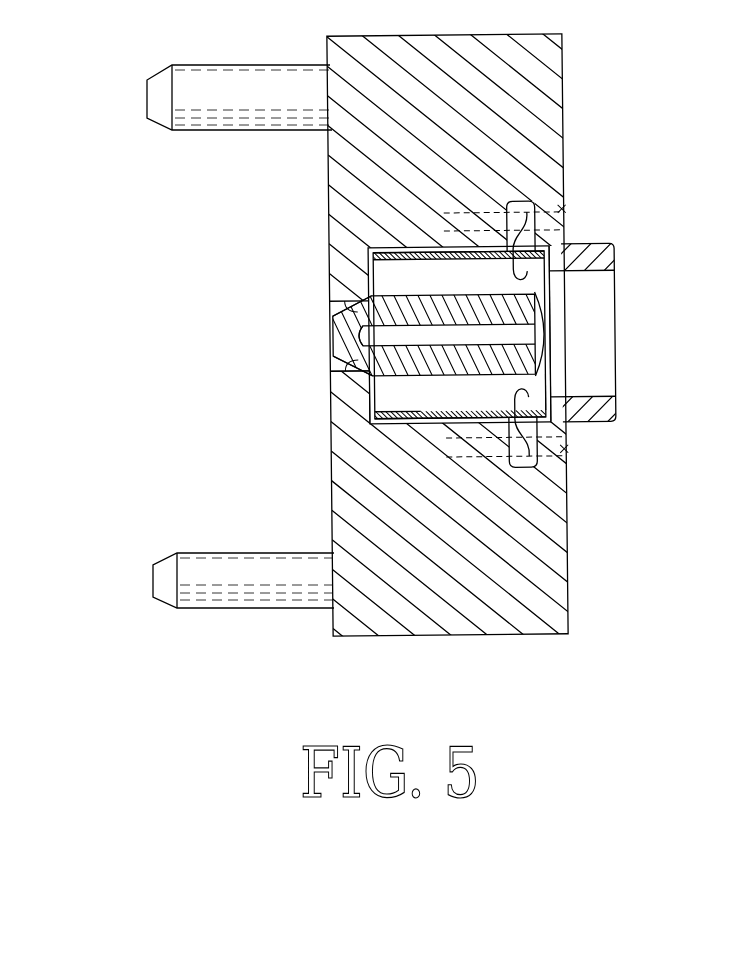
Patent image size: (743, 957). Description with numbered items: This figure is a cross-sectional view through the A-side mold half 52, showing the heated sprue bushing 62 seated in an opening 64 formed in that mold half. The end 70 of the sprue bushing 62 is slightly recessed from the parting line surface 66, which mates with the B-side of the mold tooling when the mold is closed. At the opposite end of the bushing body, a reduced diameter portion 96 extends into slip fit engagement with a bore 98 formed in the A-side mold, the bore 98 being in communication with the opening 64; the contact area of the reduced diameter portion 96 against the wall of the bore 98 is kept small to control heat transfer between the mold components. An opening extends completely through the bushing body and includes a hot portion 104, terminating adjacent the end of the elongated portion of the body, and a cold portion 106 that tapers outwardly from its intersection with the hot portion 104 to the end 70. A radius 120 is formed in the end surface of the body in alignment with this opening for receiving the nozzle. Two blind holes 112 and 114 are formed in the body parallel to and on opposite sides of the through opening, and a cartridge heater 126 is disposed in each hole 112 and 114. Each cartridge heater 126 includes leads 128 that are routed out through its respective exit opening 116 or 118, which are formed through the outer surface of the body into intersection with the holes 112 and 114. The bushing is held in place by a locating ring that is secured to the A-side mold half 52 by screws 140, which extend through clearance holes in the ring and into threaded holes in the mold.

The A-side mold half 52 is at (566, 58).
The parting line surface 66 is at (328, 162).
The opening 64 is at (400, 256).
The blind hole 114 is at (494, 256).
The leads 128 is at (525, 222).
The screws 140 is at (565, 210).
The cartridge heater 126 is at (382, 271).
The exit opening 118 is at (537, 283).
The bore 98 is at (336, 320).
The cold portion 106 is at (345, 337).
The hot portion 104 is at (527, 334).
The radius 120 is at (545, 348).
The end 70 is at (333, 364).
The reduced diameter portion 96 is at (334, 394).
The exit opening 116 is at (538, 382).
The blind hole 112 is at (396, 424).
The sprue bushing 62 is at (433, 414).